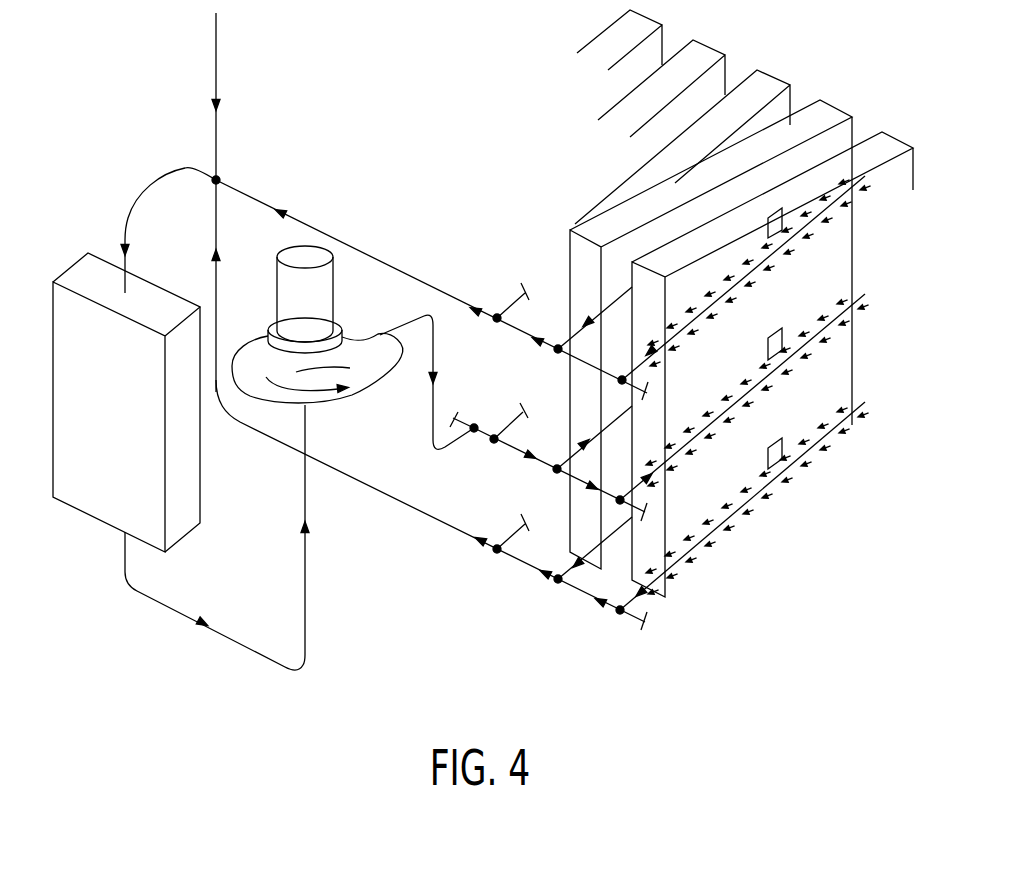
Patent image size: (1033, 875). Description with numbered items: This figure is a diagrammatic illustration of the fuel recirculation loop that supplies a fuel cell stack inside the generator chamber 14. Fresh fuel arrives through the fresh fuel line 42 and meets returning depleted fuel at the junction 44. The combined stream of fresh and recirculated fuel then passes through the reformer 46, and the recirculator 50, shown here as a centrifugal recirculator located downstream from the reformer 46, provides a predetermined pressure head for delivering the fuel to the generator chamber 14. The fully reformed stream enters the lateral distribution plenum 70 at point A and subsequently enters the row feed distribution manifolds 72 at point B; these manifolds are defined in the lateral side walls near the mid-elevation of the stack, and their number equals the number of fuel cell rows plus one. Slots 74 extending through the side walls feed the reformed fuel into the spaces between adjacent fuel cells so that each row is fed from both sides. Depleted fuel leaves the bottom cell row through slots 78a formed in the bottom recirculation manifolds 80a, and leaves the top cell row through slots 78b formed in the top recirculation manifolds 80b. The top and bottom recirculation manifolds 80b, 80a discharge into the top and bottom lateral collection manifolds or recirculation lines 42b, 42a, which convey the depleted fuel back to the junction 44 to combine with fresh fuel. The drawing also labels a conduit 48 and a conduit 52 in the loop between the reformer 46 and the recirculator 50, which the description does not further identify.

The generator chamber 14 is at (562, 206).
The fresh fuel line 42 is at (218, 57).
The recirculation line 42a is at (386, 259).
The recirculation line 42b is at (382, 492).
The junction 44 is at (217, 179).
The reformer 46 is at (96, 517).
The pump inlet line 48 is at (247, 650).
The recirculator 50 is at (354, 398).
The pump outlet line 52 is at (450, 455).
The lateral distribution plenum 70 is at (485, 432).
The row feed distribution manifolds 72 is at (638, 495).
The slots 74 is at (800, 355).
The slots 78a is at (798, 468).
The slots 78b is at (800, 228).
The bottom recirculation manifolds 80a is at (655, 575).
The top recirculation manifolds 80b is at (670, 340).